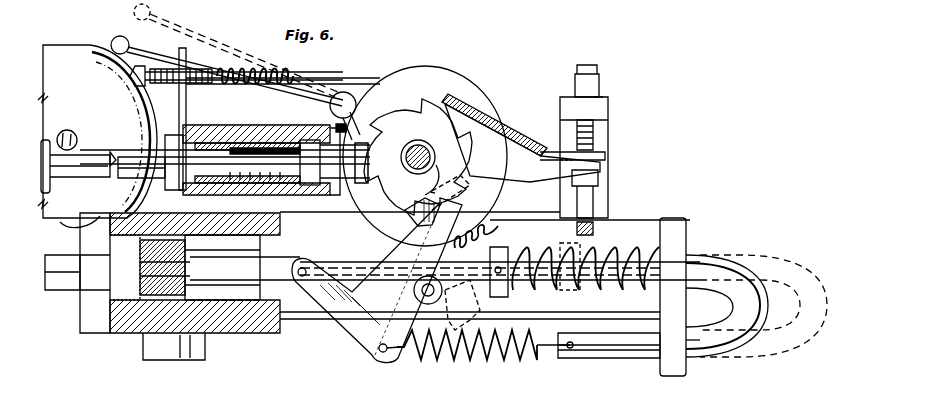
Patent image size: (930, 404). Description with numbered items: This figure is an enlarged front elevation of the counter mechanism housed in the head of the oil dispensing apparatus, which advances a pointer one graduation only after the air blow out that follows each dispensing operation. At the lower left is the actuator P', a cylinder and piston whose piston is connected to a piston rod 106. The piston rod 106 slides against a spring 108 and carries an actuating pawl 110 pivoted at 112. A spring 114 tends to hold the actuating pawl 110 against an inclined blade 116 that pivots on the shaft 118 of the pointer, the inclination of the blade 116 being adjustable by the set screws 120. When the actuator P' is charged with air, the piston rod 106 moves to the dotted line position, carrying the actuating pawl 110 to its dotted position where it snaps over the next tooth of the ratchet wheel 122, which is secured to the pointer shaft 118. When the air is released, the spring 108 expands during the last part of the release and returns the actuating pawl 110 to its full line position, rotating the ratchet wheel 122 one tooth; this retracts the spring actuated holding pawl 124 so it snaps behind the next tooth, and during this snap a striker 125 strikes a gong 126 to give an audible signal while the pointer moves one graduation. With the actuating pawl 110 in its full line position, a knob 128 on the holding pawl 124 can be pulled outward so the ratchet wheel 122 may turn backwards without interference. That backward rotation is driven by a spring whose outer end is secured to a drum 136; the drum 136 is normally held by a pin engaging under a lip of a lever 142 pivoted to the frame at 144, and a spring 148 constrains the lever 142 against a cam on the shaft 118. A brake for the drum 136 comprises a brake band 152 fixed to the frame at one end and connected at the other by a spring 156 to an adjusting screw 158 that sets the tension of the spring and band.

The piston rod 106 is at (333, 260).
The spring 108 is at (612, 225).
The actuating pawl 110 is at (352, 340).
The pivot 112 is at (305, 290).
The spring 114 is at (498, 357).
The inclined blade 116 is at (405, 222).
The pointer shaft 118 is at (430, 157).
The set screws 120 is at (608, 140).
The ratchet wheel 122 is at (473, 155).
The holding pawl 124 is at (402, 157).
The striker 125 is at (165, 42).
The gong 126 is at (97, 136).
The knob 128 is at (52, 182).
The drum 136 is at (487, 107).
The lever 142 is at (392, 250).
The pivot 144 is at (442, 300).
The spring 148 is at (500, 226).
The brake band 152 is at (332, 77).
The spring 156 is at (250, 70).
The adjusting screw 158 is at (200, 85).
The actuator P' is at (161, 349).